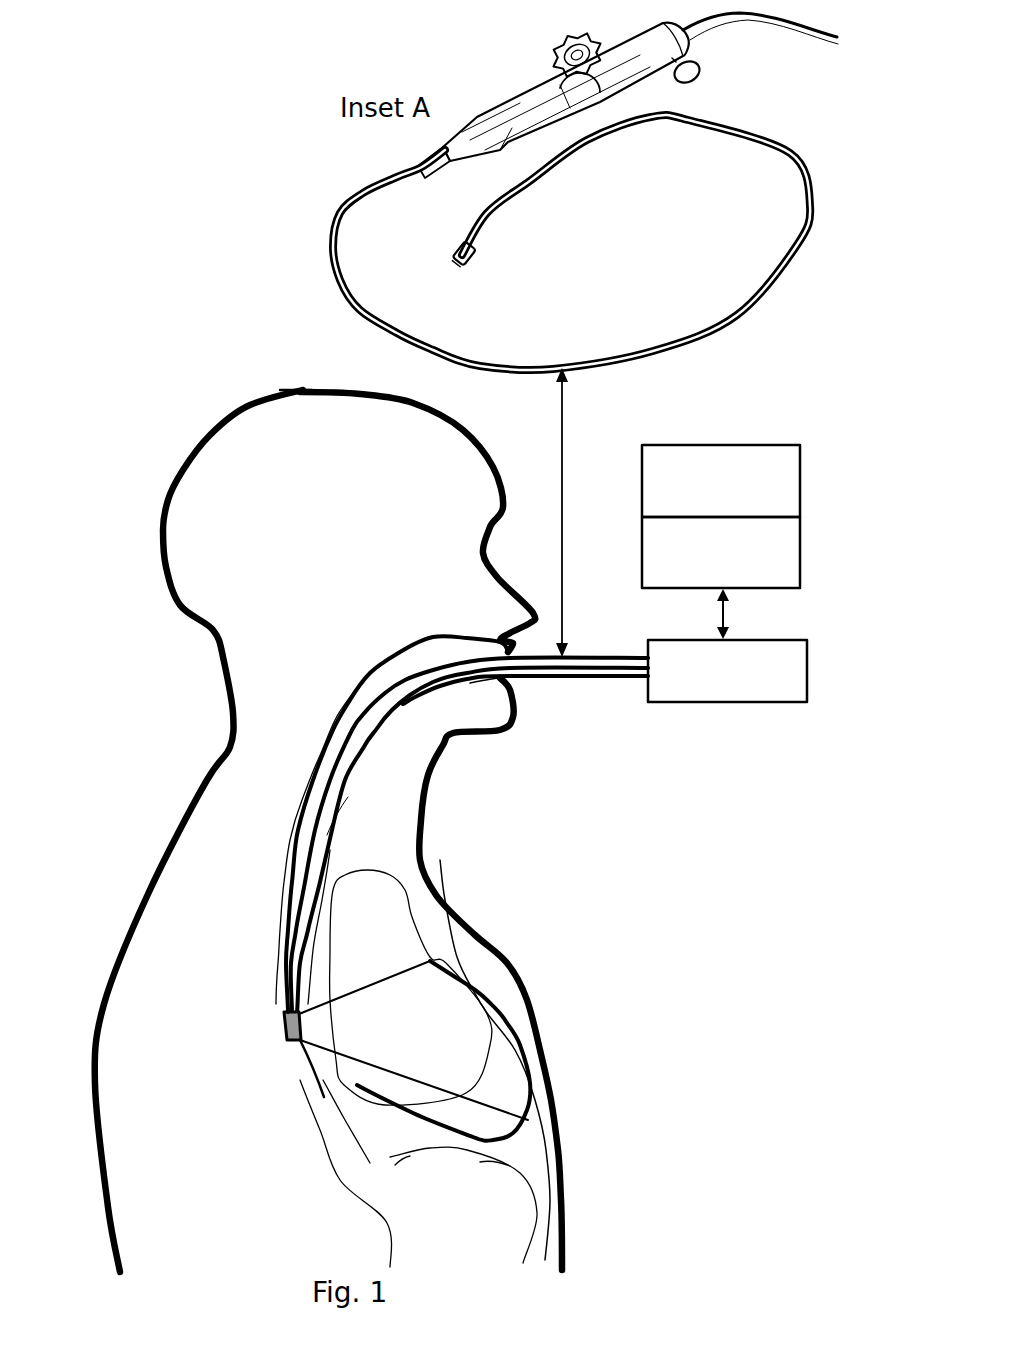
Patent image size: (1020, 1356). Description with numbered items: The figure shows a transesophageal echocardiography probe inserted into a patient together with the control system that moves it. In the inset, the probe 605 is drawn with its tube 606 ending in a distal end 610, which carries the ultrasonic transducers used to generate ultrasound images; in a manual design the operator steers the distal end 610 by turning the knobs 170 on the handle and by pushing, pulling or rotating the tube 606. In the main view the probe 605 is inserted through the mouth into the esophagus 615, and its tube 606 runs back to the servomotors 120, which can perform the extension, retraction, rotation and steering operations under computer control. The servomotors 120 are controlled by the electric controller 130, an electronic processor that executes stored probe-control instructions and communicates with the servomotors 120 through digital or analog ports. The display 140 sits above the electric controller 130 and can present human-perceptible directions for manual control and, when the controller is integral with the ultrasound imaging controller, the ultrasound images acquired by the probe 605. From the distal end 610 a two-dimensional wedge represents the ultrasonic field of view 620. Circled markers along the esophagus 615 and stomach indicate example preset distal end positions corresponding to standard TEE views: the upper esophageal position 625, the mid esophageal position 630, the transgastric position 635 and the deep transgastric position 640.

The servomotors 120 is at (648, 650).
The electric controller 130 is at (642, 563).
The display 140 is at (642, 467).
The knobs 170 is at (567, 50).
The probe 605 is at (458, 74).
The tube 606 is at (545, 677).
The distal end 610 is at (456, 252).
The esophagus 615 is at (350, 797).
The ultrasonic FOV 620 is at (486, 1024).
The upper esophageal position 625 is at (292, 847).
The mid esophageal position 630 is at (377, 1040).
The transgastric position 635 is at (407, 1185).
The deep transgastric position 640 is at (492, 1188).